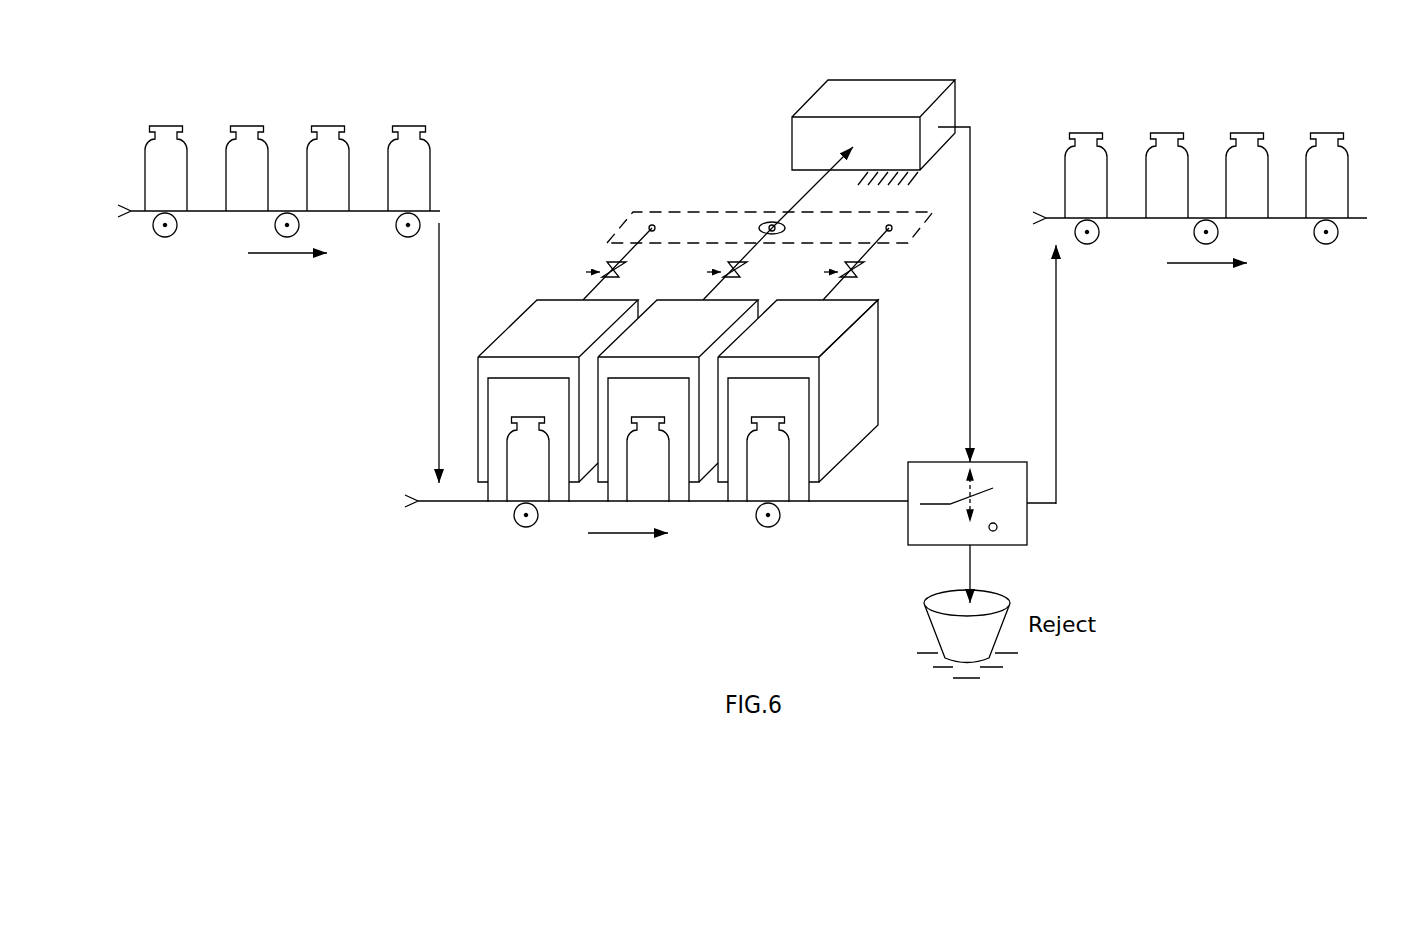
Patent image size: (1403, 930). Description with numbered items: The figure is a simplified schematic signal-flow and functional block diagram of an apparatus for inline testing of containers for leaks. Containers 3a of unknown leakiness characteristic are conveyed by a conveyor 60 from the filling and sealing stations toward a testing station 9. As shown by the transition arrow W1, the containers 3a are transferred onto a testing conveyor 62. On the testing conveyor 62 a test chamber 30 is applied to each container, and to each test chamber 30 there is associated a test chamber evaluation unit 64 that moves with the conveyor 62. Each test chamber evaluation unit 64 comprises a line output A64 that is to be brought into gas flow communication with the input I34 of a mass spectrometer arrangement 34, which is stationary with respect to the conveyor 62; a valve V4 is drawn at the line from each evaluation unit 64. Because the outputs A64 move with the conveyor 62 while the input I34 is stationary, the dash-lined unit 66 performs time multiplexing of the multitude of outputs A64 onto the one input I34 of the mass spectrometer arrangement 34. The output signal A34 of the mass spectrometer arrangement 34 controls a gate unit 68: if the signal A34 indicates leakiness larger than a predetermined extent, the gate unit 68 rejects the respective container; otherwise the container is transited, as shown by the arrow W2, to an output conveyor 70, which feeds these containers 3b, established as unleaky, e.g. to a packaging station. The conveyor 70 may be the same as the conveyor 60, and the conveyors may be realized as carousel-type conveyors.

The containers of unknown leakiness characteristic 3a is at (145, 167).
The containers established as unleaky 3b is at (1348, 175).
The conveyor 60 is at (368, 212).
The testing conveyor 62 is at (452, 503).
The output conveyor 70 is at (1287, 219).
The testing station 9 is at (476, 337).
The test chamber evaluation unit 64 is at (678, 401).
The test chamber 30 is at (641, 442).
The mass spectrometer arrangement 34 is at (873, 132).
The time multiplexing unit 66 is at (687, 208).
The gate unit 68 is at (1027, 520).
The control valve V4 is at (728, 264).
The output signal of the mass spectrometer arrangement A34 is at (967, 284).
The input to the mass spectrometer arrangement I34 is at (806, 190).
The line output of the test chamber evaluation unit A64 is at (935, 220).
The transition arrow W1 is at (421, 353).
The transition arrow W2 is at (1073, 374).